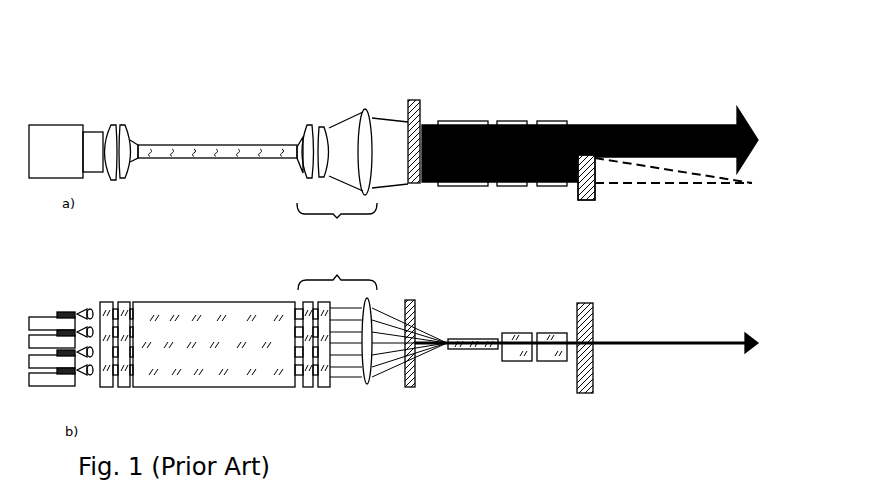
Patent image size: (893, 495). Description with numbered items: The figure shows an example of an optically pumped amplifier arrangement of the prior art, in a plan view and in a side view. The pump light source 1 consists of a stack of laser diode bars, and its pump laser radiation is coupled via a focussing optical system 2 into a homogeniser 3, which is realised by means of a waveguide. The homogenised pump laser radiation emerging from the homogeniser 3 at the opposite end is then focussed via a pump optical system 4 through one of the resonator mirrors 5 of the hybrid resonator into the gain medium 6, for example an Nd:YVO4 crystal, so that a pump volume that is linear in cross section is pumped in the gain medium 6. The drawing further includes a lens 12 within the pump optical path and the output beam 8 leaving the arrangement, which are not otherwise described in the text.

The pump light source 1 is at (62, 140).
The focussing optical system 2 is at (110, 297).
The homogeniser 3 is at (207, 153).
The pump optical system 4 is at (336, 249).
The resonator mirror 5 is at (423, 102).
The gain medium 6 is at (478, 339).
The output light beam 8 is at (673, 343).
The focusing lens 12 is at (383, 130).